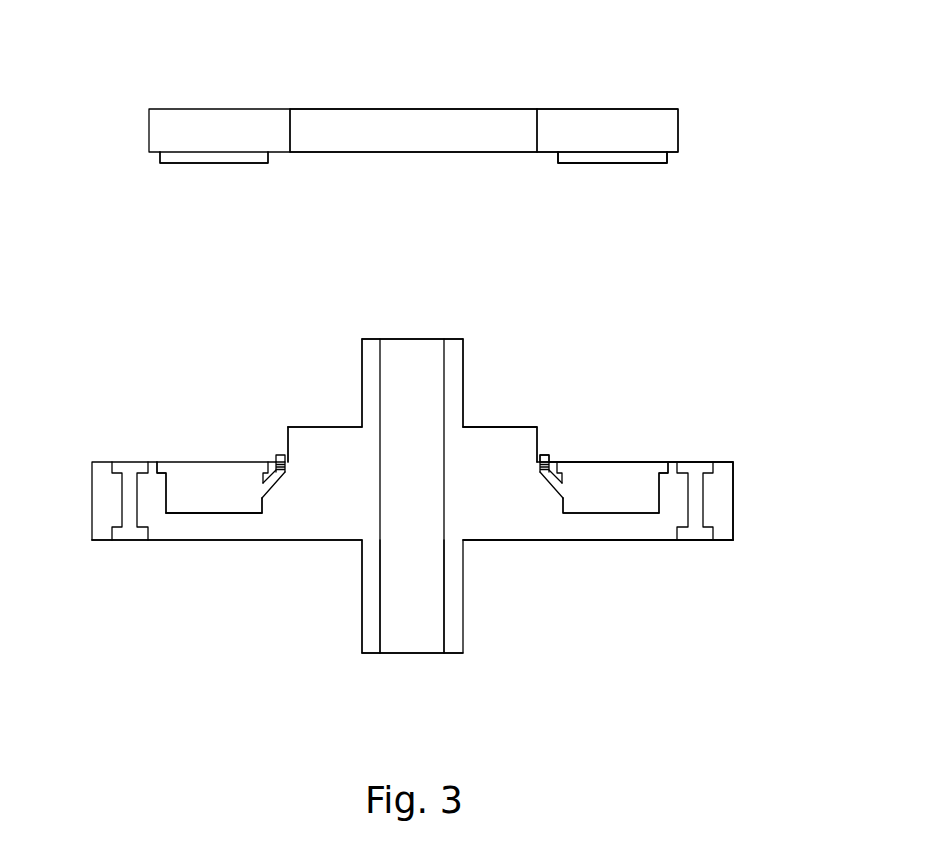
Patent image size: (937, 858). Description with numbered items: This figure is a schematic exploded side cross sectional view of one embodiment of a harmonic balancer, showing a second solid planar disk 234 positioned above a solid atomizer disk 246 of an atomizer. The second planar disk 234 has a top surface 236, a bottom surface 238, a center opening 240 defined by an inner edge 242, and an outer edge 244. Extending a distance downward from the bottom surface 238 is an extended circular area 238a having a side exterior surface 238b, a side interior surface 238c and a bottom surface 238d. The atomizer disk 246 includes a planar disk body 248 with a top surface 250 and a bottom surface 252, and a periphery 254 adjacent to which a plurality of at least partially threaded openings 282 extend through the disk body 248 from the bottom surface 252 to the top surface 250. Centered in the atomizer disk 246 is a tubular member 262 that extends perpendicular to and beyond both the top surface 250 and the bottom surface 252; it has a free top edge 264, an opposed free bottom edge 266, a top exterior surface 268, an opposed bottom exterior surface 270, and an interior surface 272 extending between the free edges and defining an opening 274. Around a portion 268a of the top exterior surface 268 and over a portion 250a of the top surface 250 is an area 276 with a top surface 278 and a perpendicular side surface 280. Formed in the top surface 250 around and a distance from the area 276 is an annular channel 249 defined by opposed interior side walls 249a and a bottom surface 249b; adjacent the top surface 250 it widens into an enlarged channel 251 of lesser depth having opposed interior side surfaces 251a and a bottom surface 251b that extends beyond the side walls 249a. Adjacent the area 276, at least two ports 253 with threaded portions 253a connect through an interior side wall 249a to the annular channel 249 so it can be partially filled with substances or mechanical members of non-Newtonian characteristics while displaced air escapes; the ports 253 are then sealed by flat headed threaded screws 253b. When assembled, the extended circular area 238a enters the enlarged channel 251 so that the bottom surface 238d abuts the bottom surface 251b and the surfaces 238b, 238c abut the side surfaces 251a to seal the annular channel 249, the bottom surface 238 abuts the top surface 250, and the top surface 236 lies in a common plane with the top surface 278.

The second solid planar disk 234 is at (650, 108).
The top surface 236 is at (568, 108).
The bottom surface 238 is at (546, 152).
The extended circular area 238a is at (611, 163).
The side exterior surface 238b is at (670, 158).
The side interior surface 238c is at (273, 162).
The bottom surface 238d is at (221, 165).
The center opening 240 is at (416, 108).
The inner edge 242 is at (291, 110).
The outer edge 244 is at (680, 131).
The solid atomizer disk 246 is at (530, 541).
The planar disk body 248 is at (268, 541).
The annular channel 249 is at (641, 478).
The interior side walls 249a is at (563, 505).
The bottom surface 249b is at (218, 514).
The top surface 250 is at (726, 462).
The portion of top surface 250a is at (538, 455).
The enlarged channel 251 is at (656, 462).
The interior side surfaces 251a is at (577, 462).
The bottom surface 251b is at (663, 480).
The bottom surface 252 is at (633, 541).
The ports 253 is at (548, 486).
The threaded portion 253a is at (540, 477).
The flat headed threaded screws 253b is at (547, 455).
The periphery 254 is at (734, 480).
The tubular member 262 is at (464, 375).
The free top edge 264 is at (462, 340).
The free bottom edge 266 is at (452, 654).
The top exterior surface 268 is at (361, 360).
The portion of top exterior surface 268a is at (482, 430).
The bottom exterior surface 270 is at (360, 622).
The interior surface 272 is at (394, 654).
The opening 274 is at (418, 348).
The area 276 is at (528, 427).
The top surface 278 is at (337, 427).
The side surface 280 is at (287, 437).
The at least partially threaded openings 282 is at (706, 502).